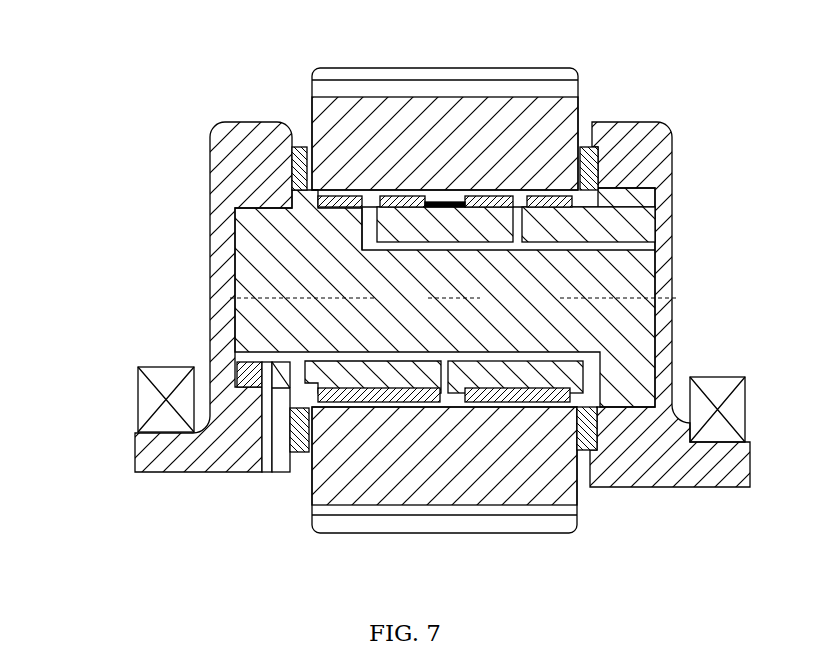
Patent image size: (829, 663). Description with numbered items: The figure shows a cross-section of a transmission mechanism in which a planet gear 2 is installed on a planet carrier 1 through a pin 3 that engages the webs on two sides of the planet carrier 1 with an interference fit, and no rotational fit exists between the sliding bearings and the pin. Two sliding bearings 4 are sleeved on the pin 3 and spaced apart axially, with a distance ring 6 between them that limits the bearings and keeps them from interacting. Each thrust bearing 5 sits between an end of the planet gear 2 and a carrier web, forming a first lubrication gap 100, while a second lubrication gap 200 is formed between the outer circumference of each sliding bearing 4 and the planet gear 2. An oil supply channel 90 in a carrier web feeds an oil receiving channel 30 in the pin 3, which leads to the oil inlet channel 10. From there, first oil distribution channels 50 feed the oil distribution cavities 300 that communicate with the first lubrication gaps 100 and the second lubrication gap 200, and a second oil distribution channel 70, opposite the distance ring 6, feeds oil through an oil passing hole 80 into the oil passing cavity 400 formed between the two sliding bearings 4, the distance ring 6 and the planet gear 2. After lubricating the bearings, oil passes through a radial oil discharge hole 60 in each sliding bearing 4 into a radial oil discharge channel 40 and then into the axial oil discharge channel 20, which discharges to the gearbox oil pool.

The planet carrier 1 is at (247, 162).
The planet gear 2 is at (577, 113).
The pin 3 is at (642, 283).
The sliding bearing 4 is at (400, 203).
The thrust bearing 5 is at (292, 145).
The distance ring 6 is at (443, 202).
The oil inlet channel 10 is at (542, 356).
The axial oil discharge channel 20 is at (574, 243).
The oil receiving channel 30 is at (259, 381).
The radial oil discharge channel 40 is at (338, 196).
The first oil distribution channel 50 is at (593, 385).
The radial oil discharge hole 60 is at (368, 196).
The second oil distribution channel 70 is at (447, 373).
The oil passing hole 80 is at (437, 394).
The oil supply channel 90 is at (261, 448).
The first lubrication gap 100 is at (304, 446).
The second lubrication gap 200 is at (373, 228).
The oil distribution cavity 300 is at (301, 404).
The oil passing cavity 400 is at (451, 397).